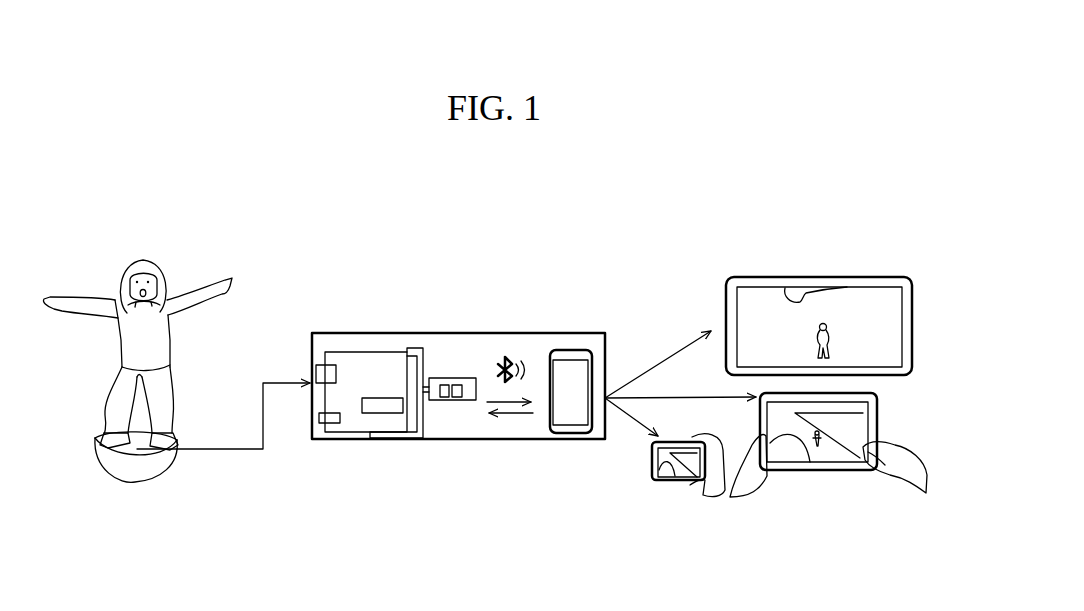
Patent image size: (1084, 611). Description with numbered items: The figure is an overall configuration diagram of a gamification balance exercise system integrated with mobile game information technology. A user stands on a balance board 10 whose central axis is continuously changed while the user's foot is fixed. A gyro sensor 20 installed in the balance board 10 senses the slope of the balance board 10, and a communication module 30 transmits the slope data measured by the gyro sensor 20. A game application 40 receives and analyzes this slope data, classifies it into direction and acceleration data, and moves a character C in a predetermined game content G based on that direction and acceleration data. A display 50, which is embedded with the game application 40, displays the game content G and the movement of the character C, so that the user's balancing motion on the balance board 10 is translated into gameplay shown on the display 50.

The balance board 10 is at (140, 468).
The gyro sensor 20 is at (360, 422).
The communication module 30 is at (455, 402).
The game application 40 is at (575, 413).
The display 50 is at (836, 320).
The game content G is at (892, 338).
The character C is at (833, 340).